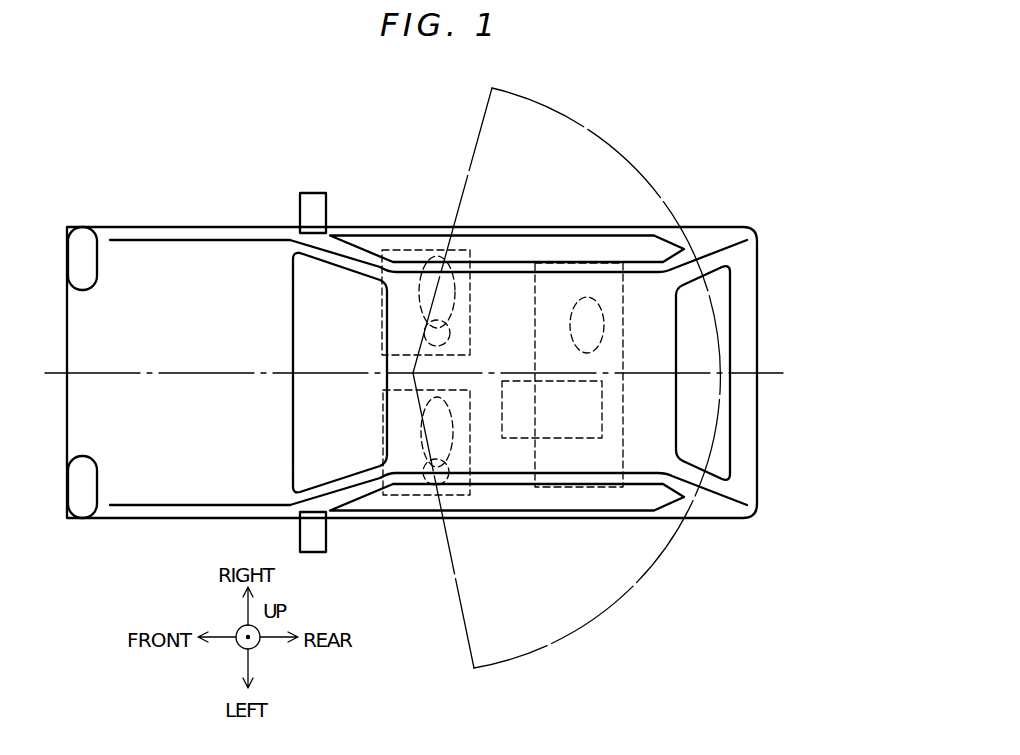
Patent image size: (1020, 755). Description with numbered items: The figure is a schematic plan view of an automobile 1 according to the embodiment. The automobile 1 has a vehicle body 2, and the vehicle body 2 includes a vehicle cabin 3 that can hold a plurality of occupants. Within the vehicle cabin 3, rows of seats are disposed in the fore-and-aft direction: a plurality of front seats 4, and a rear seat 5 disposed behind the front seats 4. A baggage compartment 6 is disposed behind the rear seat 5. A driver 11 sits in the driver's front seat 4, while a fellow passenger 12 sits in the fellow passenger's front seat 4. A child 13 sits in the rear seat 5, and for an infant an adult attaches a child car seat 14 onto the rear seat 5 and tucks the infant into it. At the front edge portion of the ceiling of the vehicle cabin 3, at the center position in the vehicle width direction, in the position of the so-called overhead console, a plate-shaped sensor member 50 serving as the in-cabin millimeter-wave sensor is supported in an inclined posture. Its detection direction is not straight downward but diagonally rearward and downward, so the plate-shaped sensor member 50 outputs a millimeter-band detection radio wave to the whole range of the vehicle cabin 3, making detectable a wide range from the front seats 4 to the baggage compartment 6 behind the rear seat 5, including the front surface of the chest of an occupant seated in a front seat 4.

The automobile 1 is at (200, 152).
The vehicle body 2 is at (258, 258).
The vehicle cabin 3 is at (520, 228).
The front seats 4 is at (408, 250).
The rear seat 5 is at (578, 262).
The baggage compartment 6 is at (715, 322).
The driver 11 is at (446, 250).
The fellow passenger 12 is at (445, 484).
The child 13 is at (585, 307).
The child car seat 14 is at (517, 437).
The plate-shaped sensor member 50 is at (387, 373).